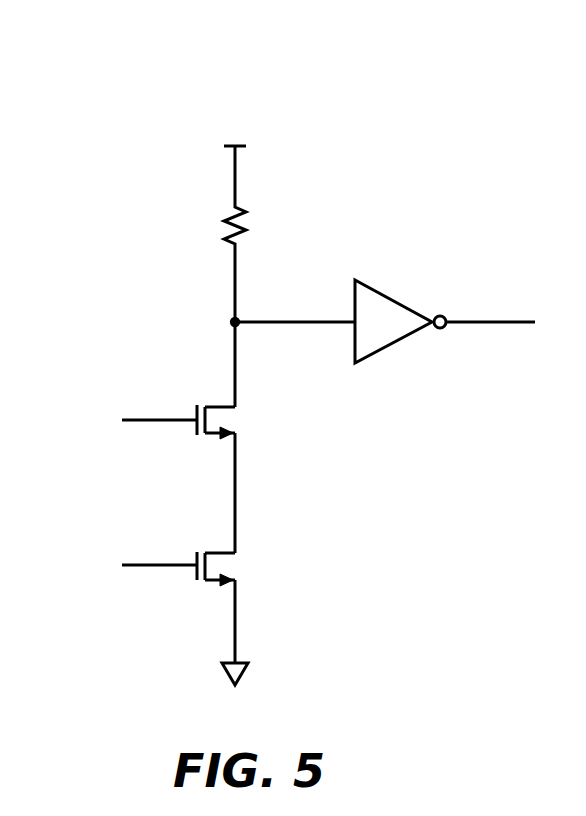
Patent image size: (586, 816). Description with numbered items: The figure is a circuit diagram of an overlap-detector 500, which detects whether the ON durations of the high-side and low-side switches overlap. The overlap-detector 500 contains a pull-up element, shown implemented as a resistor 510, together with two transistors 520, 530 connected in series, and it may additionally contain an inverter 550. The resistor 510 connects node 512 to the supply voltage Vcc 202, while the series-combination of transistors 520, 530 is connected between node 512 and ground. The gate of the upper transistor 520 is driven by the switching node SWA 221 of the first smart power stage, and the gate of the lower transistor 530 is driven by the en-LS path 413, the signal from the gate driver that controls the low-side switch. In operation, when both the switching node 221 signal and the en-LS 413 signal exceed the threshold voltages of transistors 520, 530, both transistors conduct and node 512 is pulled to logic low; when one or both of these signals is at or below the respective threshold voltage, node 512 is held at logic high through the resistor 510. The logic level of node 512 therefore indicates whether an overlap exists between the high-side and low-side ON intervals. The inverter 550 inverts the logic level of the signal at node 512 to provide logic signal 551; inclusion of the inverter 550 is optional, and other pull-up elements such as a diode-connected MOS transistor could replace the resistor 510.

The overlap-detector 500 is at (244, 62).
The supply voltage Vcc 202 is at (235, 146).
The resistor 510 is at (248, 215).
The node 512 is at (237, 322).
The transistor 520 is at (233, 422).
The node SWA-1 221 is at (145, 421).
The transistor 530 is at (235, 568).
The path en-LS 413 is at (145, 566).
The inverter 550 is at (370, 289).
The logic signal 551 is at (505, 322).